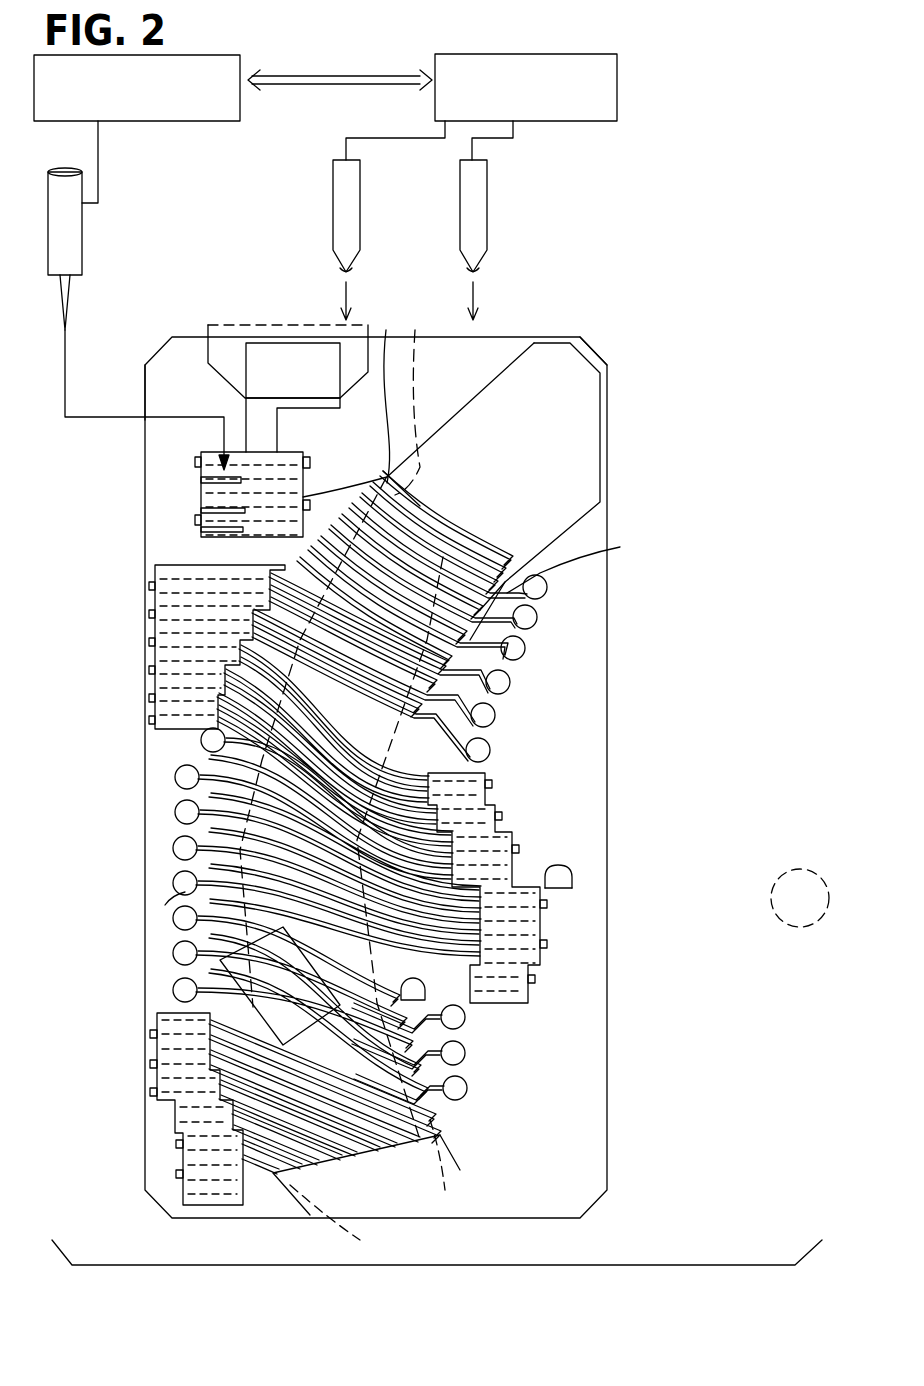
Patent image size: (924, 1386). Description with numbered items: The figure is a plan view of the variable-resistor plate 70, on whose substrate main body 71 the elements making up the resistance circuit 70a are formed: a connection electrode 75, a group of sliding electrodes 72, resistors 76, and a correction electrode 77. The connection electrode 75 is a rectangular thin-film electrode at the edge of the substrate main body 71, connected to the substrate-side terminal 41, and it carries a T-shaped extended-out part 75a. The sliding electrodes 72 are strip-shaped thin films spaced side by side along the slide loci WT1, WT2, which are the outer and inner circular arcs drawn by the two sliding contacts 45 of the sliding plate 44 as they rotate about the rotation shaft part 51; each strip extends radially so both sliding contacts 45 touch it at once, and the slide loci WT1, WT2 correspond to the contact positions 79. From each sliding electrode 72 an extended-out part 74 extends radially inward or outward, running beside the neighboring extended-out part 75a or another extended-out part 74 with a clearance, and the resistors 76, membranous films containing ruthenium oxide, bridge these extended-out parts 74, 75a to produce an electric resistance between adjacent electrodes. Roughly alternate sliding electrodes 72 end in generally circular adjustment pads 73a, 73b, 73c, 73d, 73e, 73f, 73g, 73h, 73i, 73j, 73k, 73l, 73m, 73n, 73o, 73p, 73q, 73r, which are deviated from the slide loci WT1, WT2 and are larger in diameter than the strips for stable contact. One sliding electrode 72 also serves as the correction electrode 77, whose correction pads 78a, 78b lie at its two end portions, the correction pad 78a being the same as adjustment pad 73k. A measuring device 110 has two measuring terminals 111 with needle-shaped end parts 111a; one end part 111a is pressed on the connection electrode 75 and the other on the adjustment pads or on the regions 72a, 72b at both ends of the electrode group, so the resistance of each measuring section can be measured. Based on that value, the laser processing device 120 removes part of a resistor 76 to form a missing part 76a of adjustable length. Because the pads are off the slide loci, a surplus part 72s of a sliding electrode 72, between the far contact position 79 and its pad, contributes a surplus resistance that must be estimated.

The laser processing device 120 is at (245, 64).
The measuring device 110 is at (618, 64).
The measuring terminal 111 is at (360, 210).
The end part 111a is at (346, 272).
The variable-resistor plate 70 is at (526, 337).
The resistance circuit 70a is at (585, 345).
The substrate main body 71 is at (157, 388).
The sliding electrode 72 is at (384, 345).
The region 72a is at (545, 440).
The region 72b is at (415, 1160).
The surplus part 72s is at (520, 575).
The substrate-side terminal 41 is at (190, 340).
The connection electrode 75 is at (288, 345).
The extended-out part 75a is at (205, 455).
The missing part 76a is at (210, 482).
The extended-out part 74 is at (200, 520).
The resistor 76 is at (160, 605).
The correction electrode 77 is at (470, 862).
The correction pad 78a is at (165, 905).
The correction pad 78b is at (572, 878).
The contact position 79 is at (540, 573).
The adjustment pad 73a is at (547, 587).
The adjustment pad 73b is at (537, 617).
The adjustment pad 73c is at (525, 648).
The adjustment pad 73d is at (510, 682).
The adjustment pad 73e is at (495, 715).
The adjustment pad 73f is at (490, 750).
The adjustment pad 73g is at (200, 740).
The adjustment pad 73h is at (175, 777).
The adjustment pad 73i is at (175, 812).
The adjustment pad 73j is at (173, 848).
The adjustment pad 73k is at (173, 883).
The adjustment pad 73l is at (173, 918).
The adjustment pad 73m is at (173, 953).
The adjustment pad 73n is at (173, 992).
The adjustment pad 73o is at (430, 990).
The adjustment pad 73p is at (465, 1017).
The adjustment pad 73q is at (465, 1053).
The adjustment pad 73r is at (467, 1088).
The sliding plate 44 is at (160, 985).
The sliding contact 45 is at (323, 1222).
The rotation shaft part 51 is at (800, 869).
The slide locus WT1 is at (415, 340).
The slide locus WT2 is at (455, 1165).